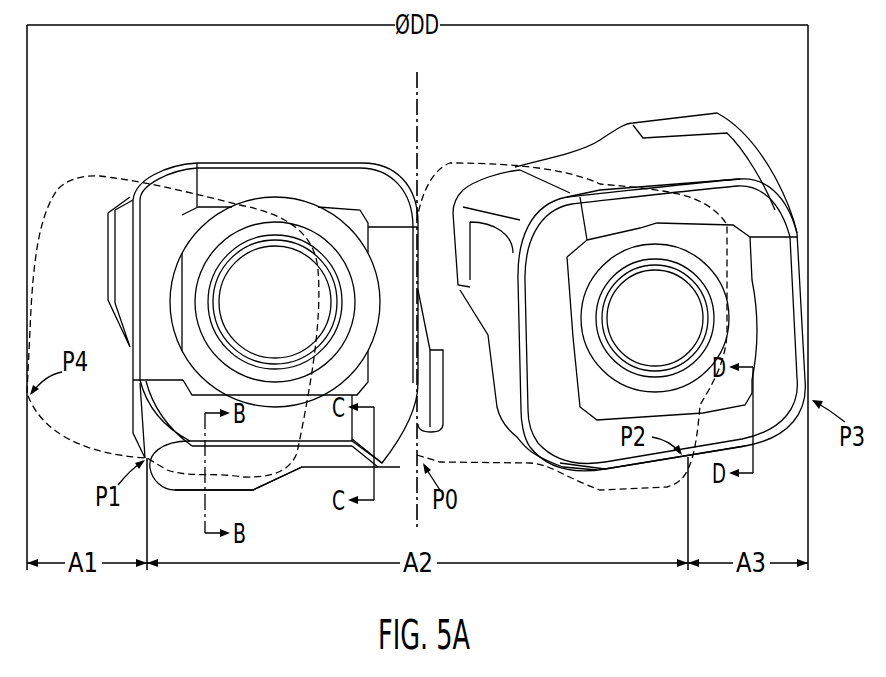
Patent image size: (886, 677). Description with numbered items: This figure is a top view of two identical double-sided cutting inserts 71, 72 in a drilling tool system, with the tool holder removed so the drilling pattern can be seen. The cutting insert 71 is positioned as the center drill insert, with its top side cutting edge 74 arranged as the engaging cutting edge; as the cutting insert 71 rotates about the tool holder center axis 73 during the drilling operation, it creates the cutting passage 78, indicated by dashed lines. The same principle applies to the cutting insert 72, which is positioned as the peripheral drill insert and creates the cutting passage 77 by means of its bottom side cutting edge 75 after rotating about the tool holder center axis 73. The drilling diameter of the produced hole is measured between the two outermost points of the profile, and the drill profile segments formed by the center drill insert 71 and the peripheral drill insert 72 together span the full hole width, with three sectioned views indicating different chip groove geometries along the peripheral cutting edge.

The cutting insert 71 is at (260, 137).
The cutting insert 72 is at (564, 137).
The tool holder center axis 73 is at (410, 108).
The top side cutting edge 74 is at (286, 481).
The bottom side cutting edge 75 is at (628, 478).
The cutting passage 77 is at (95, 176).
The cutting passage 78 is at (601, 185).